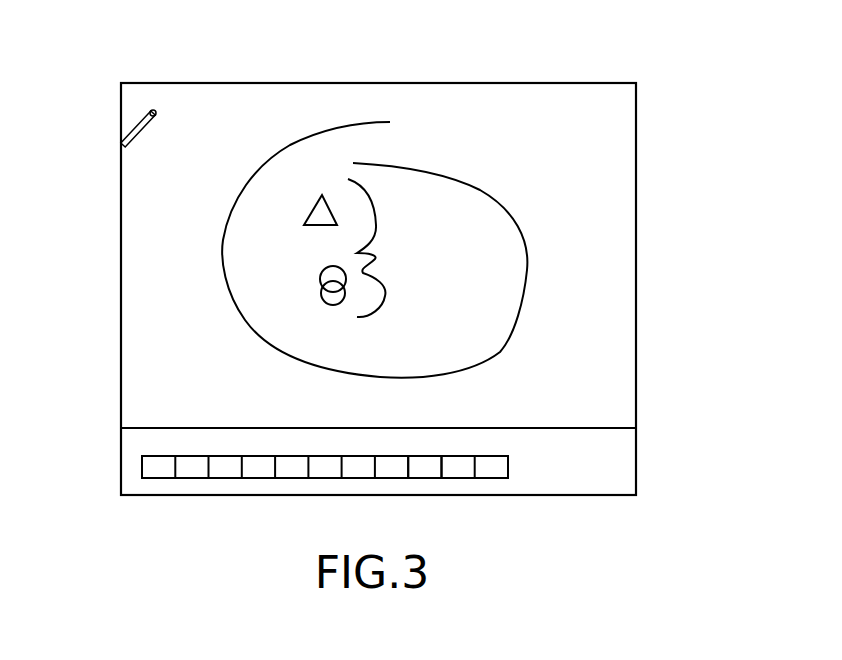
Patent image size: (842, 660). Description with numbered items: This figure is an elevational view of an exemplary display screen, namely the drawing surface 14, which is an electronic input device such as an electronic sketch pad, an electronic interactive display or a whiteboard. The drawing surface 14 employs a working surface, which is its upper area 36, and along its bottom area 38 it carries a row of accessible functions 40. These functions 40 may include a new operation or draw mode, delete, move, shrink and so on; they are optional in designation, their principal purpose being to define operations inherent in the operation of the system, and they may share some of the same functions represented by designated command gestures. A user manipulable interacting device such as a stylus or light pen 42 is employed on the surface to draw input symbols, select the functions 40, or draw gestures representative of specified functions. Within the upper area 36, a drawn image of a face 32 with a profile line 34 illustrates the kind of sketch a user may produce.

The drawing surface 14 is at (637, 377).
The drawn image of a face 32 is at (505, 346).
The facial profile line 34 is at (377, 258).
The upper area 36 is at (623, 163).
The bottom area 38 is at (180, 487).
The accessible functions 40 is at (432, 468).
The stylus 42 is at (132, 127).